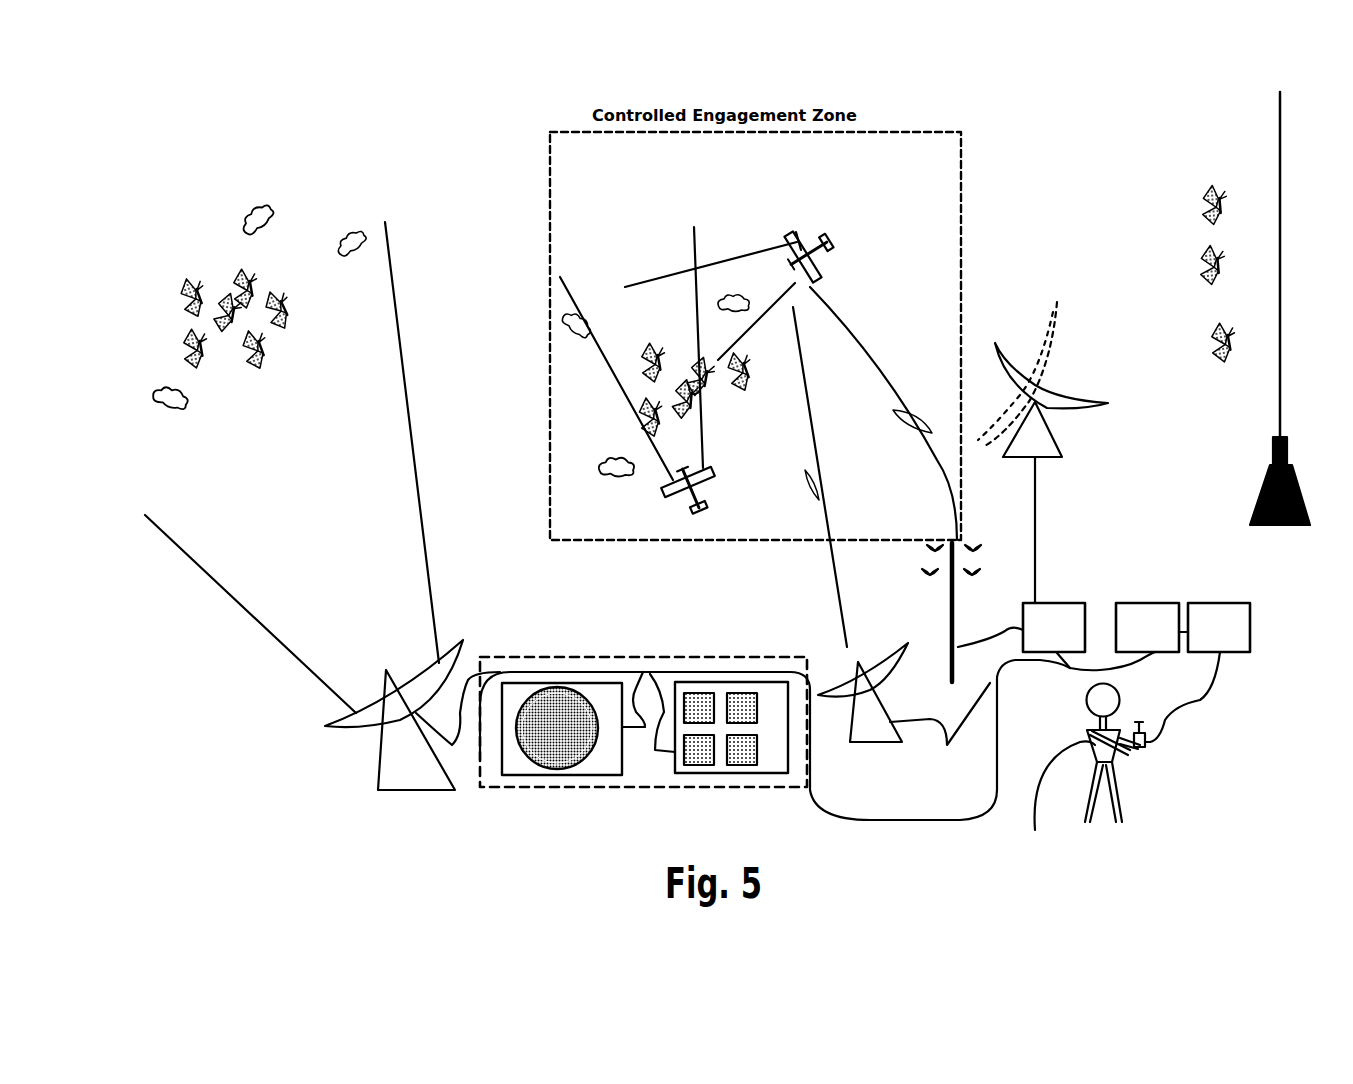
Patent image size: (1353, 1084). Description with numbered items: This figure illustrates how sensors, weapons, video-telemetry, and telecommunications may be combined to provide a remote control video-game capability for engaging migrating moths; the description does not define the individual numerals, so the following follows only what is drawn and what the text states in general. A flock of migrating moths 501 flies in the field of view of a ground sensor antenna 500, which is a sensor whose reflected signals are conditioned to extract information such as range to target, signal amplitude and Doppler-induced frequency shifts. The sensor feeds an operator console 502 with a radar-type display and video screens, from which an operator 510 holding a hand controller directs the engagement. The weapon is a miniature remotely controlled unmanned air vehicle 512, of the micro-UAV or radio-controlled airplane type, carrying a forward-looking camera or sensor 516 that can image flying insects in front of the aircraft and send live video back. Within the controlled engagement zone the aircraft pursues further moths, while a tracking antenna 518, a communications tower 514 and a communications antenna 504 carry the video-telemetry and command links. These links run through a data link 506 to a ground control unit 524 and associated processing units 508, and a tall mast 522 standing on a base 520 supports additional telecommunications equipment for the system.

The radar antenna 500 is at (352, 732).
The flock of birds 501 is at (195, 285).
The command and control console 502 is at (558, 655).
The communications antenna 504 is at (1047, 432).
The data link cable 506 is at (1047, 813).
The processing units 508 is at (1250, 632).
The operator 510 is at (1161, 753).
The unmanned aerial vehicle 512 is at (822, 266).
The communication tower 514 is at (950, 592).
The vehicle sensor 516 is at (800, 243).
The tracking antenna 518 is at (880, 703).
The antenna base 520 is at (1258, 505).
The antenna mast 522 is at (1276, 117).
The ground control unit 524 is at (1050, 597).